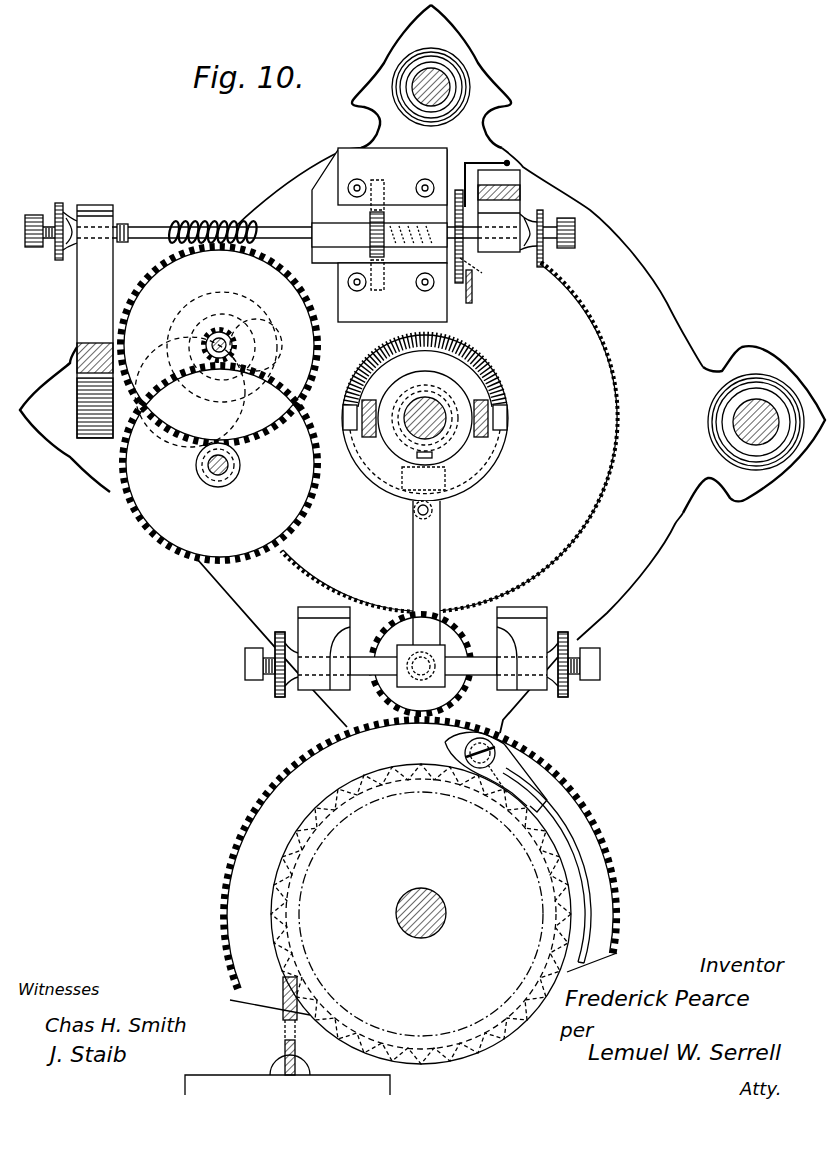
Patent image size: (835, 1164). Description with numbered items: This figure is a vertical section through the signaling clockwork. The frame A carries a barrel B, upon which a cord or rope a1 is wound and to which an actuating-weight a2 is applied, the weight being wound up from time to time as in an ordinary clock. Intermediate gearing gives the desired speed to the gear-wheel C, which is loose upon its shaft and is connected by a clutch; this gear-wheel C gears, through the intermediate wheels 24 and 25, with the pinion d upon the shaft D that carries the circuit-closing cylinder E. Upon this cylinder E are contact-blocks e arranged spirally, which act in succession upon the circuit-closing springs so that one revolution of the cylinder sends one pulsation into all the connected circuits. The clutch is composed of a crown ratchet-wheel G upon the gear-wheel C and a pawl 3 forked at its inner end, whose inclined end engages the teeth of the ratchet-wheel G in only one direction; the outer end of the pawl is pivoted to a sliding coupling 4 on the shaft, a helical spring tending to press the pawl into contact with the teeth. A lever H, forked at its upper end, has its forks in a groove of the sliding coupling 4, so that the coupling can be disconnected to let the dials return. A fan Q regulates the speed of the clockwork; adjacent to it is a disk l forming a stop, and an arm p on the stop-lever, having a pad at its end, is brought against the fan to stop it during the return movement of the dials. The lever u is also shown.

The frame A is at (449, 437).
The gear-wheel C is at (437, 404).
The crown ratchet-wheel G is at (483, 372).
The sliding coupling 4 is at (423, 396).
The pawl 3 is at (414, 511).
The lever H is at (443, 560).
The circuit-closing cylinder E is at (219, 345).
The shaft D is at (222, 339).
The pinion d is at (207, 341).
The contact-blocks e is at (208, 383).
The intermediate wheel 25 is at (220, 463).
The intermediate wheel 24 is at (217, 488).
The fan Q is at (379, 235).
The lever u is at (485, 170).
The disk l is at (475, 272).
The arm p is at (473, 288).
The barrel B is at (420, 892).
The cord or rope a1 is at (282, 1048).
The actuating-weight a2 is at (287, 1085).